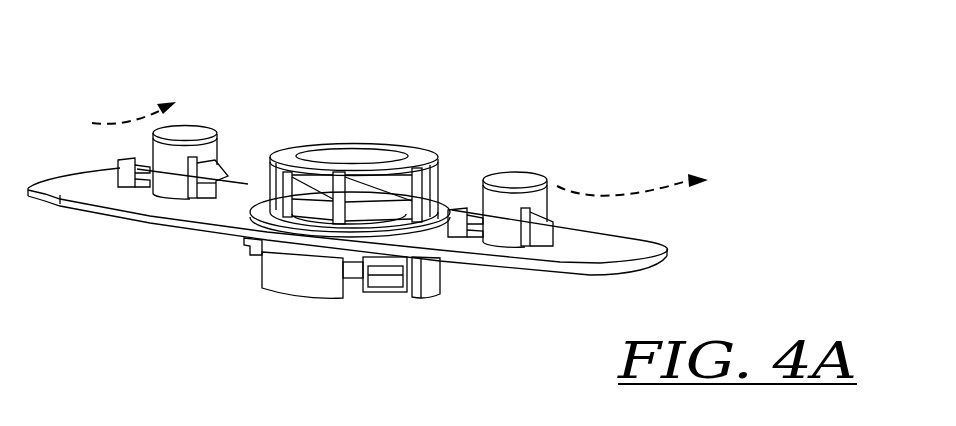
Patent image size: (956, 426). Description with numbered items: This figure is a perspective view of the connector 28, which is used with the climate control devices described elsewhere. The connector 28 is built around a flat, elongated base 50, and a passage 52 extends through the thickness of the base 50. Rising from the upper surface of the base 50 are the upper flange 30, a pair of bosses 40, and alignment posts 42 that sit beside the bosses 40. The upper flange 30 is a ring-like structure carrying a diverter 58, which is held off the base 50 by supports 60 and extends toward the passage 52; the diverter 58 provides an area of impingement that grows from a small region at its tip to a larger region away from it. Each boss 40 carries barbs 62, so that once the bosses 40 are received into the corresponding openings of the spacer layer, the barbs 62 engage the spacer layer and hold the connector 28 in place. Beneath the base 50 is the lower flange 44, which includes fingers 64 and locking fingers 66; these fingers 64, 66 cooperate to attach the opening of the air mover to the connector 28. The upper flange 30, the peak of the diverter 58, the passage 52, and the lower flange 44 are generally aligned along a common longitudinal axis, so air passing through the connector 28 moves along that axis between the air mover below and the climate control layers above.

The connector 28 is at (314, 50).
The upper flange 30 is at (326, 197).
The bosses 40 is at (188, 127).
The alignment posts 42 is at (126, 172).
The lower flange 44 is at (262, 240).
The base 50 is at (575, 270).
The passage 52 is at (393, 220).
The diverter 58 is at (354, 157).
The supports 60 is at (340, 193).
The barbs 62 is at (213, 175).
The fingers 64 is at (292, 282).
The locking fingers 66 is at (382, 275).